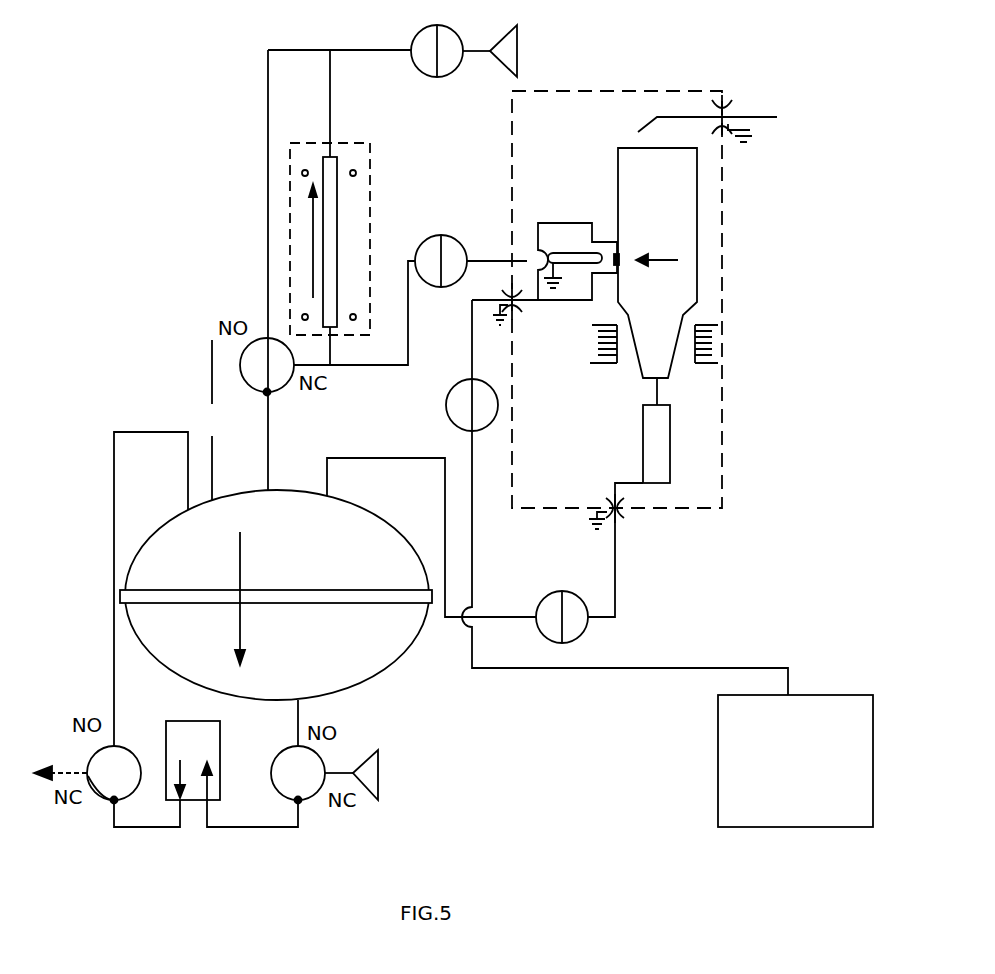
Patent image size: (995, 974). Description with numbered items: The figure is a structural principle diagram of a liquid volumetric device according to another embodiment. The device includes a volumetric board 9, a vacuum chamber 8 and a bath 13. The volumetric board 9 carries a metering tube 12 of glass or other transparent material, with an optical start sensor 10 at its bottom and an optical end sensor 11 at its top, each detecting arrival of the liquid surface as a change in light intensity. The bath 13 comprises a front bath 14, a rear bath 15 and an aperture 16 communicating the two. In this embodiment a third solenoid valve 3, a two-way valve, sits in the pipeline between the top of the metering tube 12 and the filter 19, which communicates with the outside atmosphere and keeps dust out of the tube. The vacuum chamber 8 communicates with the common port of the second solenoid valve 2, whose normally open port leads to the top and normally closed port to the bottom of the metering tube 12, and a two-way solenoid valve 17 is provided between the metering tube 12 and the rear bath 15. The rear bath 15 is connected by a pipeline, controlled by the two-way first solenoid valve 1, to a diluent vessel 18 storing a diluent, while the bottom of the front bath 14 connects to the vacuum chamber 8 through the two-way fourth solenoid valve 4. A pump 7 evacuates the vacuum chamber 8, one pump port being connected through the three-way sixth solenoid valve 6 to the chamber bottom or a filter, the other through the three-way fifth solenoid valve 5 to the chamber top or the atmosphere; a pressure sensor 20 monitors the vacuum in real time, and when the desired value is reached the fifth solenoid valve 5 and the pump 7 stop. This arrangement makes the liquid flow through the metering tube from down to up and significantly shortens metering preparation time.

The first solenoid valve 1 is at (472, 405).
The second solenoid valve 2 is at (267, 367).
The third solenoid valve 3 is at (437, 51).
The fourth solenoid valve 4 is at (562, 617).
The fifth solenoid valve 5 is at (87, 775).
The sixth solenoid valve 6 is at (324, 775).
The pump 7 is at (193, 760).
The vacuum chamber 8 is at (276, 595).
The volumetric board 9 is at (370, 143).
The start sensor 10 is at (302, 315).
The end sensor 11 is at (302, 171).
The metering tube 12 is at (344, 242).
The bath 13 is at (723, 290).
The front bath 14 is at (662, 235).
The rear bath 15 is at (602, 250).
The aperture 16 is at (617, 260).
The solenoid valve 17 is at (441, 261).
The diluent vessel 18 is at (795, 761).
The filter 19 is at (518, 51).
The pressure sensor 20 is at (212, 420).